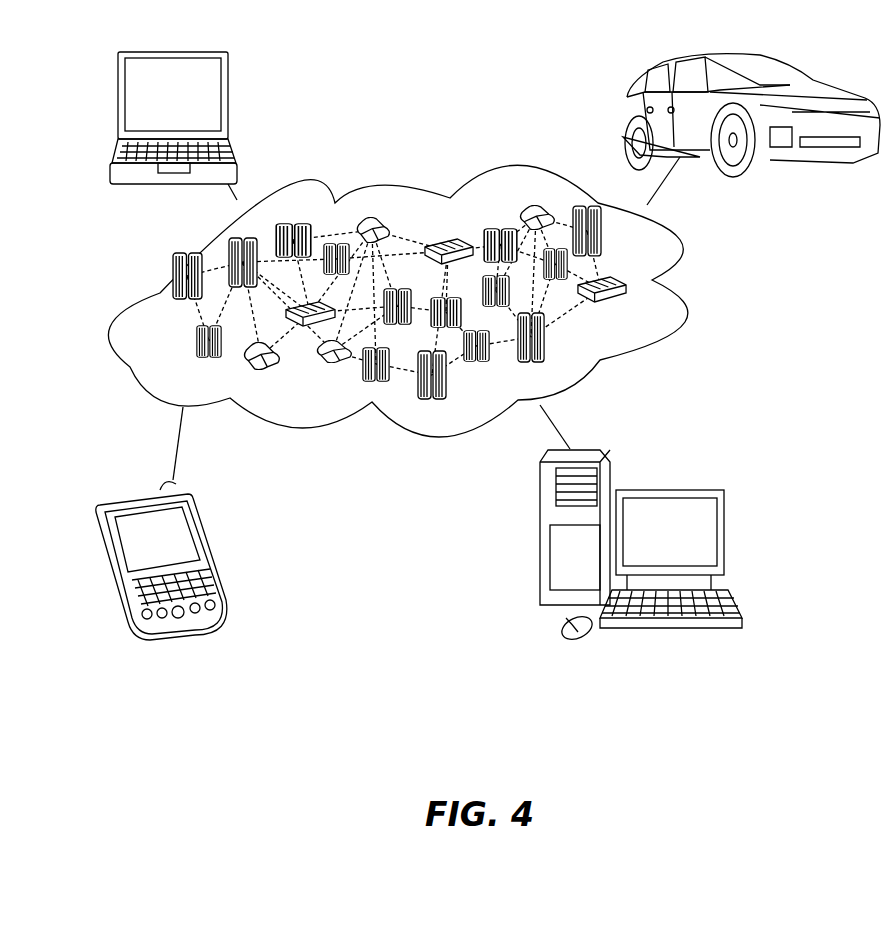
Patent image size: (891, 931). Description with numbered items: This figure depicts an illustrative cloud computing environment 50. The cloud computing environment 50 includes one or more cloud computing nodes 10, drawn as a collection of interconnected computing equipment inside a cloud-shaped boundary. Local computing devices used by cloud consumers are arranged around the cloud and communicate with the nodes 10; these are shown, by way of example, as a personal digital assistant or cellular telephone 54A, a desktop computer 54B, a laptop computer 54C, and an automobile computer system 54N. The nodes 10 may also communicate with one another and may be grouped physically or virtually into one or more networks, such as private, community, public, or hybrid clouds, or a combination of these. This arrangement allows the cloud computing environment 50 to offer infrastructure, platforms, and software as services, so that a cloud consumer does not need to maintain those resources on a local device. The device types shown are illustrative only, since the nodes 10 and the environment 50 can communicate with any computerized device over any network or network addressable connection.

The cloud computing nodes 10 is at (641, 323).
The cloud computing environment 50 is at (683, 242).
The personal digital assistant or cellular telephone 54A is at (205, 531).
The desktop computer 54B is at (725, 530).
The laptop computer 54C is at (230, 98).
The automobile computer system 54N is at (780, 70).